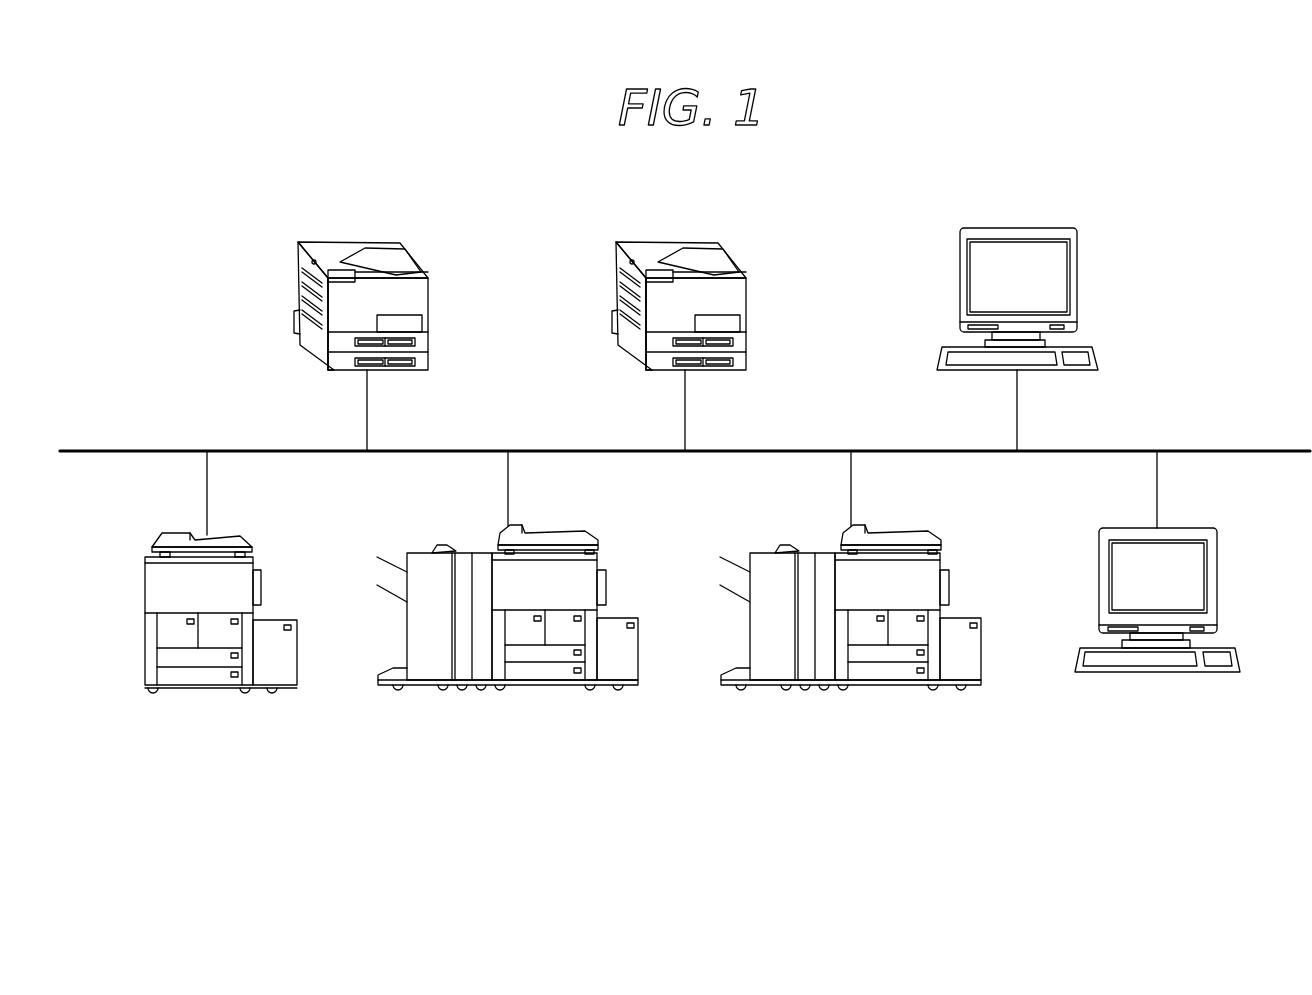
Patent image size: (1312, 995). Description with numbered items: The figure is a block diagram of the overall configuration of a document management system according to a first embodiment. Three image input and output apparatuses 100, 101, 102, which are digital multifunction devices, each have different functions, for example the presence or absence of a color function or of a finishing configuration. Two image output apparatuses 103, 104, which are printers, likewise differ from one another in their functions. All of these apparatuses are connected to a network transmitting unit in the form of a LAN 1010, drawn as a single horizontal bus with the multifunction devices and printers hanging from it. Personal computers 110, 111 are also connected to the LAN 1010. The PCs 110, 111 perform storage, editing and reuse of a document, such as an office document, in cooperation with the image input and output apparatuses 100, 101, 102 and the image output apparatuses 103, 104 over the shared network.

The image input and output apparatus 100 is at (197, 690).
The image input and output apparatus 101 is at (542, 688).
The image input and output apparatus 102 is at (876, 688).
The image output apparatus 103 is at (347, 242).
The image output apparatus 104 is at (665, 242).
The personal computer 110 is at (1043, 228).
The personal computer 111 is at (1155, 675).
The LAN 1010 is at (1233, 449).